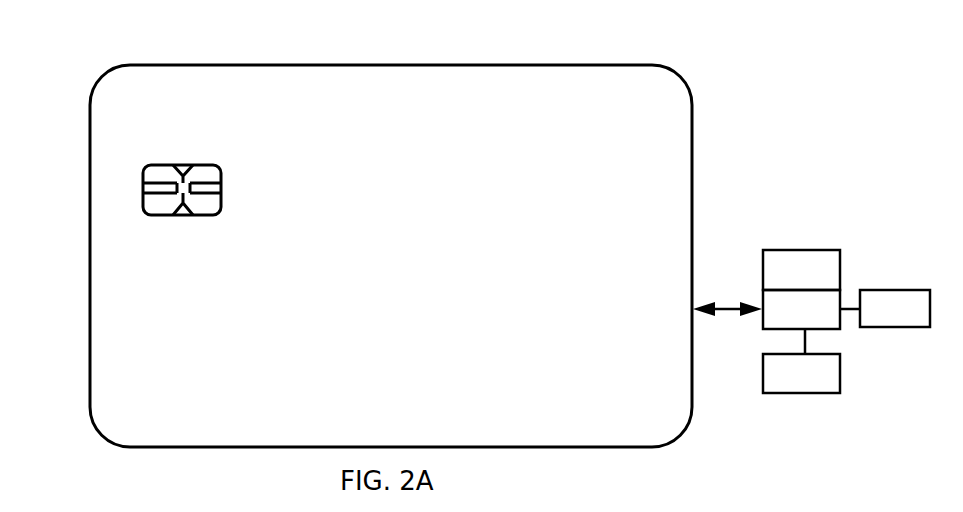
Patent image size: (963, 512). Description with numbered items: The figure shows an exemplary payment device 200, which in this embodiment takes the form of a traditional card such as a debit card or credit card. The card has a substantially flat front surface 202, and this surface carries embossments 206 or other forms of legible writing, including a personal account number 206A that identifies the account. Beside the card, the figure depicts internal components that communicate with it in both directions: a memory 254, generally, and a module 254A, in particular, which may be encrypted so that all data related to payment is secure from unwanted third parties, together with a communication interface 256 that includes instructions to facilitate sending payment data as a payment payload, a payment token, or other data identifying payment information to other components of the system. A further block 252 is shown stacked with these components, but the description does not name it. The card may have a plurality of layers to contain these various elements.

The payment device 200 is at (452, 232).
The front surface 202 is at (672, 175).
The personal account number 206A is at (147, 263).
The embossments 206 is at (482, 404).
The communication interface 252 is at (801, 270).
The memory 254 is at (811, 322).
The module 254A is at (895, 308).
The communication interface 256 is at (801, 373).